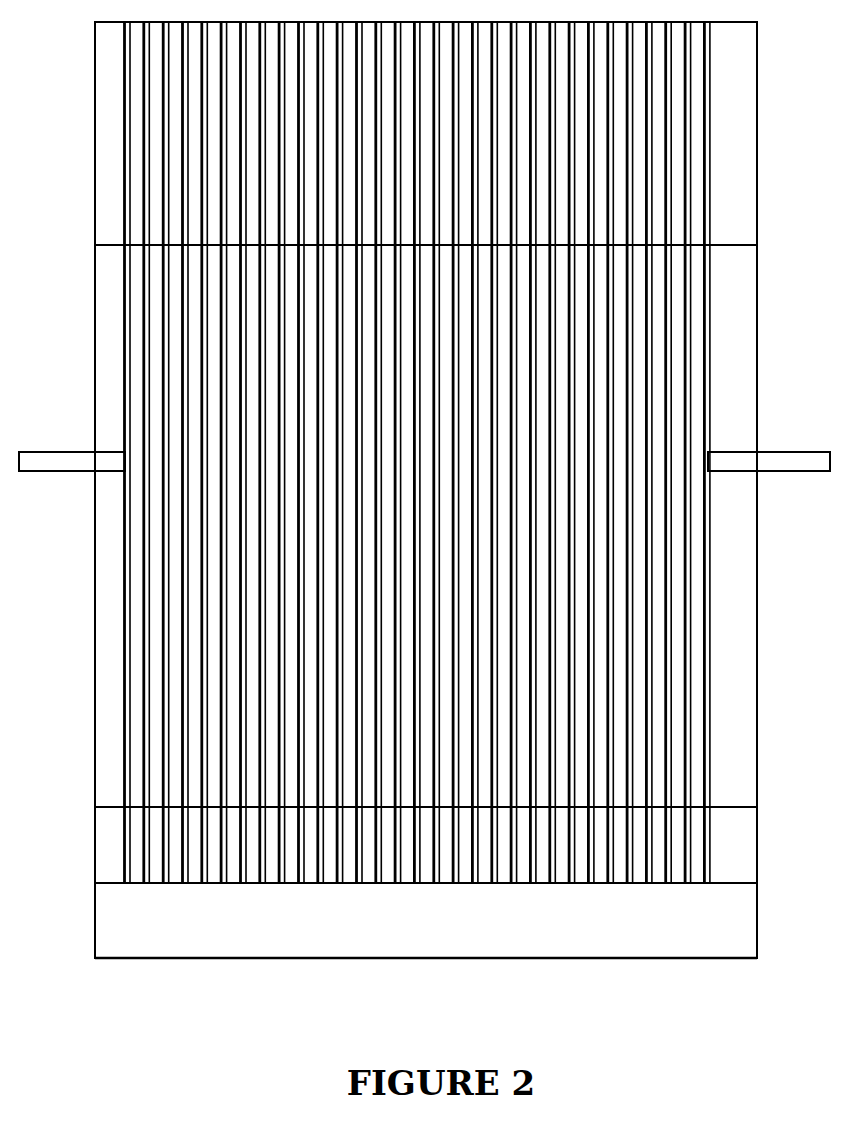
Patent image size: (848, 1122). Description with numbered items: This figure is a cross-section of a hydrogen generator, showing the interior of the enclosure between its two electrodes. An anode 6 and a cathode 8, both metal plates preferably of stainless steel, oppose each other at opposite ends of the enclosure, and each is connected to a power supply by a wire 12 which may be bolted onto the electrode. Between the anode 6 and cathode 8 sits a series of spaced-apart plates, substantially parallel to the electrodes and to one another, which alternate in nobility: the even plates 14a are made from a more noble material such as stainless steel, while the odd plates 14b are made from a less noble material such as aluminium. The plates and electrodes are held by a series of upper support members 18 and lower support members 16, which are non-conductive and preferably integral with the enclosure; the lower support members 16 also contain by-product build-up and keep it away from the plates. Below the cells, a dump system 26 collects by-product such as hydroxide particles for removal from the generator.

The upper support members 18 is at (122, 160).
The even plates 14a is at (163, 362).
The odd plates 14b is at (223, 723).
The wire 12 is at (72, 465).
The cathode 8 is at (127, 560).
The anode 6 is at (708, 595).
The lower support members 16 is at (127, 830).
The dump system 26 is at (313, 942).